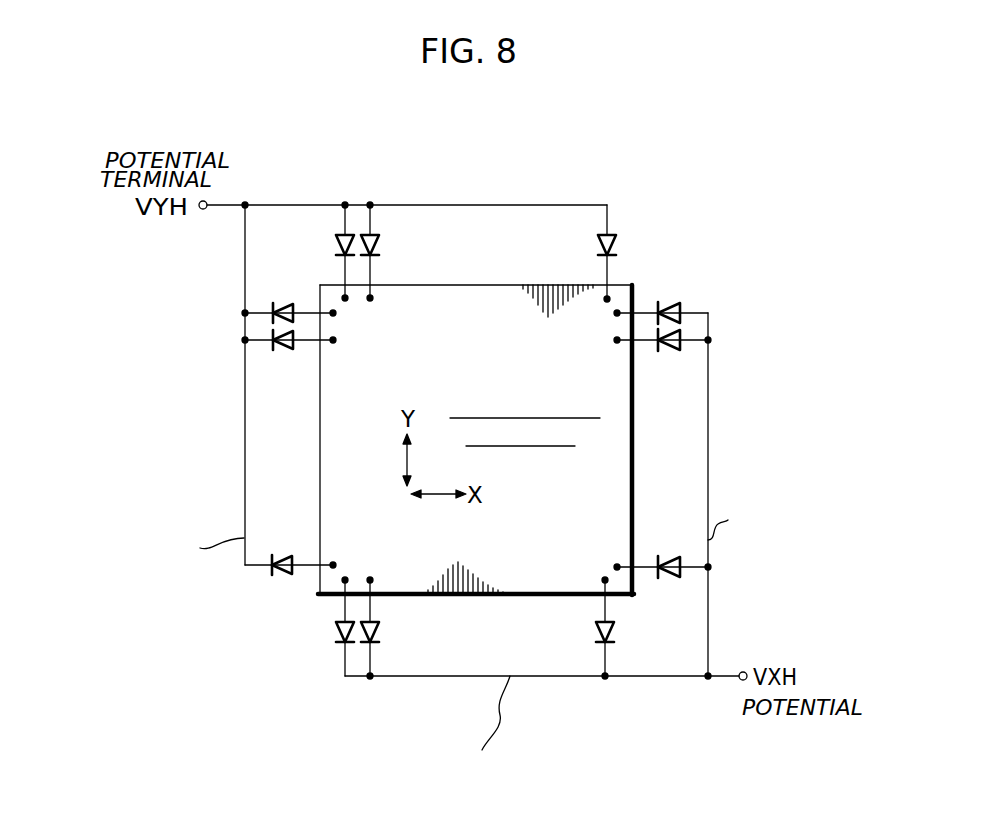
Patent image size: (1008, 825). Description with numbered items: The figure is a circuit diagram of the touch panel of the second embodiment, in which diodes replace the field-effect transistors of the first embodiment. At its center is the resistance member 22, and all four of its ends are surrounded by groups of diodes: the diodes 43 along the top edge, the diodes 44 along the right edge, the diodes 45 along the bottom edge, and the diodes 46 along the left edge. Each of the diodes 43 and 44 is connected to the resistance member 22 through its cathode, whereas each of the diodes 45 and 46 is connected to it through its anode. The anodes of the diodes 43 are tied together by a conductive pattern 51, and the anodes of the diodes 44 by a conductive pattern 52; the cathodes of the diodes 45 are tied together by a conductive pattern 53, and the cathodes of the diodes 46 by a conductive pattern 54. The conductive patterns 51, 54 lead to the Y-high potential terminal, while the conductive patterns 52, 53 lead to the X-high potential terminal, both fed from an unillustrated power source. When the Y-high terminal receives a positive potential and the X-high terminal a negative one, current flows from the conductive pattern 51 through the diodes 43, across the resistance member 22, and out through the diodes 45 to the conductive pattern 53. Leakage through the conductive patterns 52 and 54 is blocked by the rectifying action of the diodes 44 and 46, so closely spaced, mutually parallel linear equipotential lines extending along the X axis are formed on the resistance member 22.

The resistance member 22 is at (505, 375).
The diodes 43 is at (352, 233).
The diodes 44 is at (685, 321).
The diodes 45 is at (381, 624).
The diodes 46 is at (275, 323).
The conductive pattern 51 is at (493, 205).
The conductive pattern 52 is at (708, 470).
The conductive pattern 53 is at (468, 676).
The conductive pattern 54 is at (244, 452).